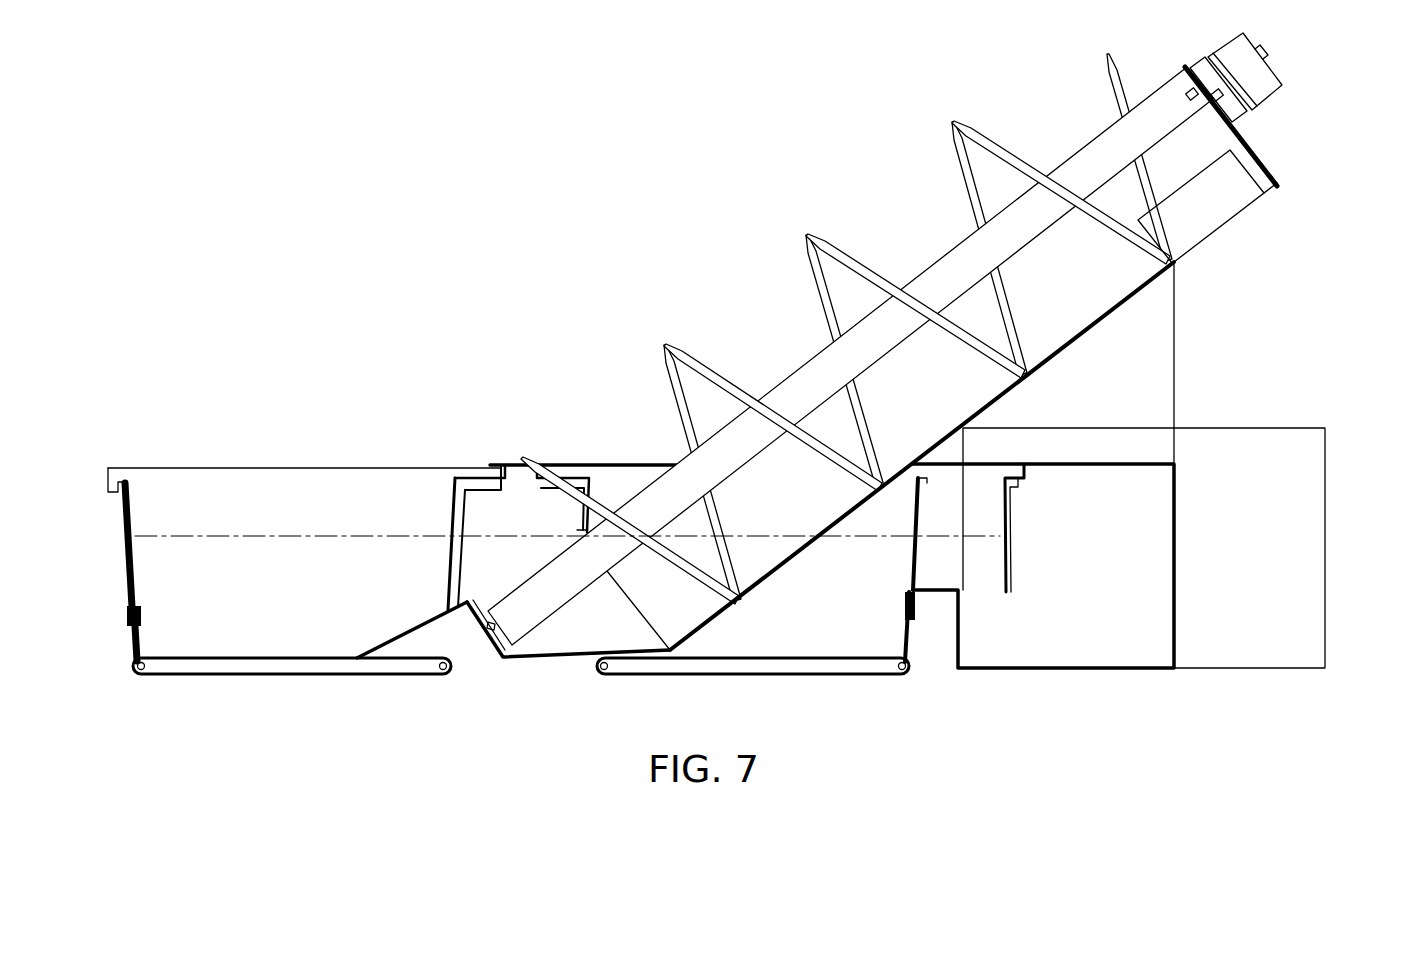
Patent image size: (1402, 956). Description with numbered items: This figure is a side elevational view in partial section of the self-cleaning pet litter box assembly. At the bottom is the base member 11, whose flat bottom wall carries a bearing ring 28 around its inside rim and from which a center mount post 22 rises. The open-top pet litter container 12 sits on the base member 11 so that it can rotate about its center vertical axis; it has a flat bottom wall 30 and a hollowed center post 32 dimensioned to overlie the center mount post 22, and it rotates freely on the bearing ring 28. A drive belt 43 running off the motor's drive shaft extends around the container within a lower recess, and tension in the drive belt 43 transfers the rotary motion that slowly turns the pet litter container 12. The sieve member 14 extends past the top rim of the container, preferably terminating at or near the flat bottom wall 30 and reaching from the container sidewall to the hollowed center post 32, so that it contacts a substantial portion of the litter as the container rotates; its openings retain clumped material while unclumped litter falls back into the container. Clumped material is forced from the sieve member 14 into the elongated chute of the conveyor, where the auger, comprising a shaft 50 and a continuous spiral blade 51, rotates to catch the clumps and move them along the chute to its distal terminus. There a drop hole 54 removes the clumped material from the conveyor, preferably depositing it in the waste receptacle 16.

The base member 11 is at (132, 637).
The open-top pet litter container 12 is at (134, 574).
The sieve member 14 is at (392, 642).
The waste receptacle 16 is at (1326, 570).
The center mount post 22 is at (466, 513).
The bearing ring 28 is at (140, 676).
The flat bottom wall 30 is at (278, 656).
The hollowed center post 32 is at (450, 508).
The drive belt 43 is at (127, 612).
The shaft 50 is at (800, 375).
The continuous spiral blade 51 is at (850, 349).
The drop hole 54 is at (1250, 196).